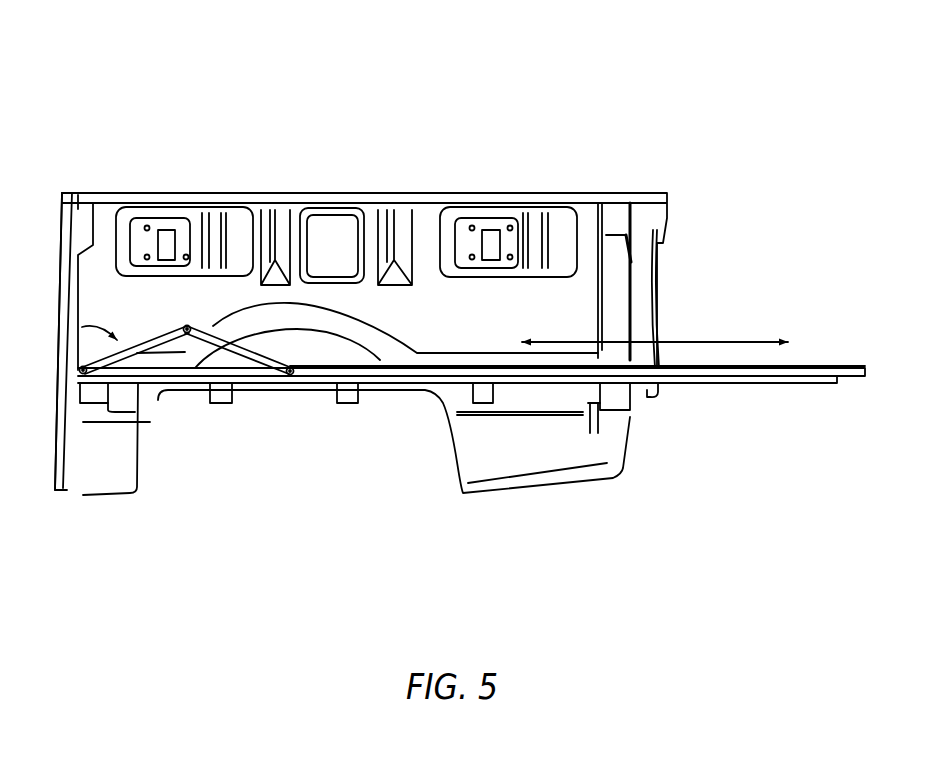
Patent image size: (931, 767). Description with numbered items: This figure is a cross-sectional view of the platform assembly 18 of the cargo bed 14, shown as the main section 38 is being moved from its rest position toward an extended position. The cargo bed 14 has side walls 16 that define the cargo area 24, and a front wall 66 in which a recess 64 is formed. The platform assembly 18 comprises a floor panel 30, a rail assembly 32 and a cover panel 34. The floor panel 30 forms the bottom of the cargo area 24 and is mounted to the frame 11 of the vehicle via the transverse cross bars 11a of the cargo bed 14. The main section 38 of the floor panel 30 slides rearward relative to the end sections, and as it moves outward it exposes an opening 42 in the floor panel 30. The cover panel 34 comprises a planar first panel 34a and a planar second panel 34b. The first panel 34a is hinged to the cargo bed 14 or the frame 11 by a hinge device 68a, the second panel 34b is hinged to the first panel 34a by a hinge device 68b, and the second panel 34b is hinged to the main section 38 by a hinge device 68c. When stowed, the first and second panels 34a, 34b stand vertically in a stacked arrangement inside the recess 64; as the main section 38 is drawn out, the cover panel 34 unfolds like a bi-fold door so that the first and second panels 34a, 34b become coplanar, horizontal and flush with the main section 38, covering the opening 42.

The frame 11 is at (532, 465).
The cross bars 11a is at (486, 413).
The cargo bed 14 is at (80, 137).
The side walls 16 is at (540, 231).
The platform assembly 18 is at (812, 415).
The cargo area 24 is at (187, 222).
The floor panel 30 is at (797, 360).
The rail assembly 32 is at (725, 385).
The cover panel 34 is at (283, 312).
The first panel 34a is at (108, 362).
The second panel 34b is at (260, 340).
The main section 38 is at (863, 364).
The opening 42 is at (167, 360).
The recess 64 is at (100, 257).
The front wall 66 is at (67, 308).
The hinge devices 68a is at (98, 366).
The hinge devices 68b is at (187, 328).
The hinge devices 68c is at (293, 370).